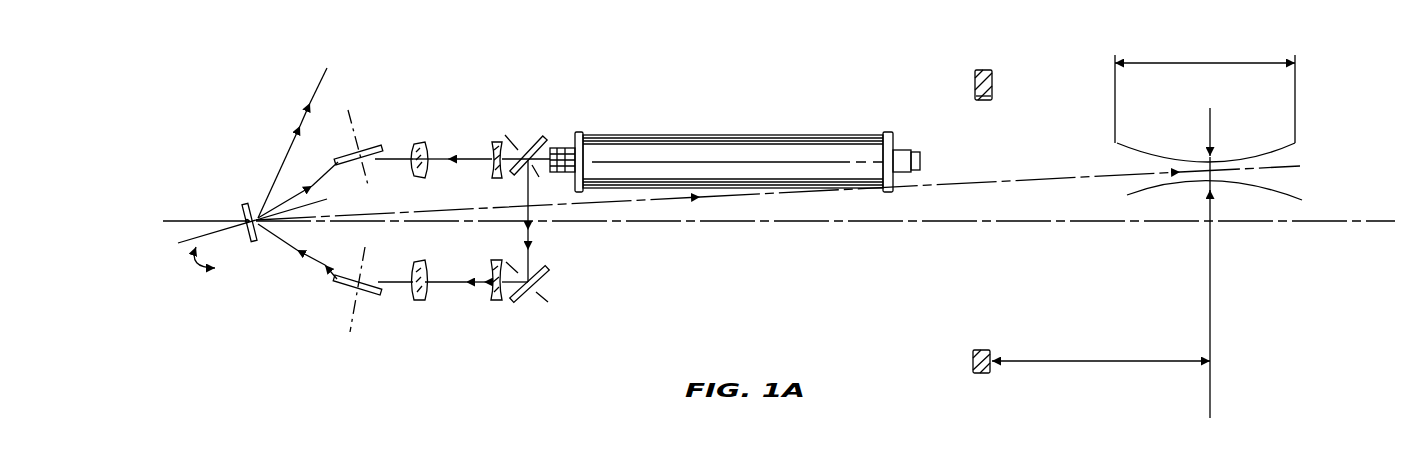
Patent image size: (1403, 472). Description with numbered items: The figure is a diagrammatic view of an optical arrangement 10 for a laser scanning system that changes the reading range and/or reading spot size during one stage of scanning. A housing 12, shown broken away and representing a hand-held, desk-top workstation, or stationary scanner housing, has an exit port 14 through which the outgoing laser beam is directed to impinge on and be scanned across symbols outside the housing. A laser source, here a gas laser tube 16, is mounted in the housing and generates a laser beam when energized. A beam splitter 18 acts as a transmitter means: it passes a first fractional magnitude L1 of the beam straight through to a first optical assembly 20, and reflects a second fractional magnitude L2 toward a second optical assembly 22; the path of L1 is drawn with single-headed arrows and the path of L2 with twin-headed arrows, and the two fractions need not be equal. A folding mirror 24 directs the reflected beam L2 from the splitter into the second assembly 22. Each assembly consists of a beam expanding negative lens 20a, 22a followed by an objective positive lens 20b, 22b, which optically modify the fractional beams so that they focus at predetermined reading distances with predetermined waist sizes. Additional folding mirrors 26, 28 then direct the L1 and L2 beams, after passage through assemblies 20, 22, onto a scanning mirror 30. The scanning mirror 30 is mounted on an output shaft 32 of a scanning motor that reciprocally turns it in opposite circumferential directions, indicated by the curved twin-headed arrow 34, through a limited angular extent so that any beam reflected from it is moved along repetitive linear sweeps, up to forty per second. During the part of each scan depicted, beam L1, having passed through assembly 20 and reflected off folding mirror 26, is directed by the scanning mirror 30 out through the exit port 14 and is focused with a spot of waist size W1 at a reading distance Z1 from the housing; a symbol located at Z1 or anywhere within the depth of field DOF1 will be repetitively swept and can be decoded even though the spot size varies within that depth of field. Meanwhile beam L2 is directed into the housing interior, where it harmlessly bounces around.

The arrangement 10 is at (480, 88).
The housing 12 is at (992, 77).
The exit port 14 is at (982, 100).
The gas laser tube 16 is at (748, 137).
The beam splitter 18 is at (542, 137).
The first optical assembly 20 is at (450, 151).
The beam expanding negative lens 20a is at (494, 178).
The objective positive lens 20b is at (427, 178).
The second optical assembly 22 is at (461, 283).
The beam expanding negative lens 22a is at (496, 260).
The objective positive lens 22b is at (426, 247).
The folding mirror 24 is at (550, 280).
The folding mirror 26 is at (370, 146).
The folding mirror 28 is at (342, 288).
The scanning mirror 30 is at (253, 243).
The output shaft 32 is at (241, 218).
The curved twin-headed arrow 34 is at (191, 268).
The first fractional magnitude L1 is at (1312, 168).
The second fractional magnitude L2 is at (374, 166).
The waist size W1 is at (1209, 250).
The depth of field DOF1 is at (1253, 62).
The reading distance Z1 is at (1103, 361).